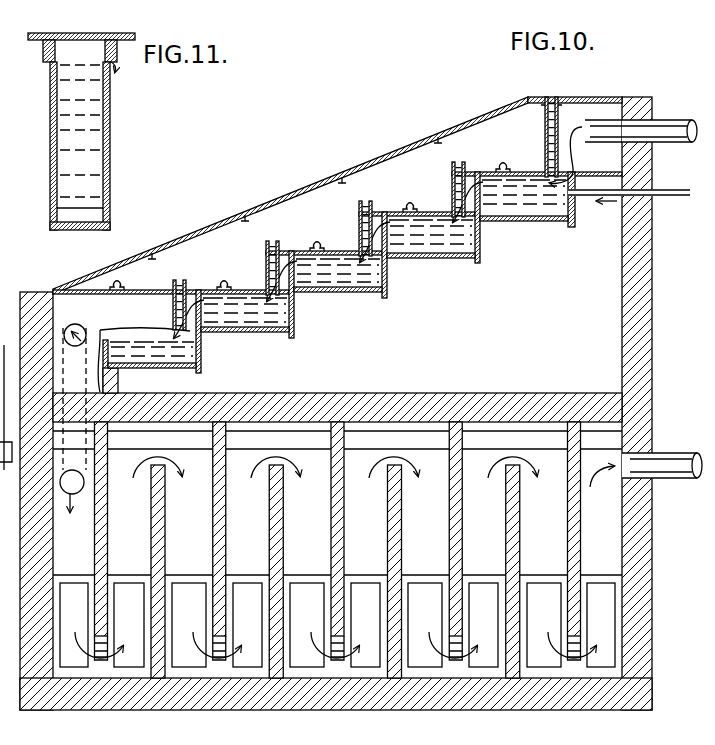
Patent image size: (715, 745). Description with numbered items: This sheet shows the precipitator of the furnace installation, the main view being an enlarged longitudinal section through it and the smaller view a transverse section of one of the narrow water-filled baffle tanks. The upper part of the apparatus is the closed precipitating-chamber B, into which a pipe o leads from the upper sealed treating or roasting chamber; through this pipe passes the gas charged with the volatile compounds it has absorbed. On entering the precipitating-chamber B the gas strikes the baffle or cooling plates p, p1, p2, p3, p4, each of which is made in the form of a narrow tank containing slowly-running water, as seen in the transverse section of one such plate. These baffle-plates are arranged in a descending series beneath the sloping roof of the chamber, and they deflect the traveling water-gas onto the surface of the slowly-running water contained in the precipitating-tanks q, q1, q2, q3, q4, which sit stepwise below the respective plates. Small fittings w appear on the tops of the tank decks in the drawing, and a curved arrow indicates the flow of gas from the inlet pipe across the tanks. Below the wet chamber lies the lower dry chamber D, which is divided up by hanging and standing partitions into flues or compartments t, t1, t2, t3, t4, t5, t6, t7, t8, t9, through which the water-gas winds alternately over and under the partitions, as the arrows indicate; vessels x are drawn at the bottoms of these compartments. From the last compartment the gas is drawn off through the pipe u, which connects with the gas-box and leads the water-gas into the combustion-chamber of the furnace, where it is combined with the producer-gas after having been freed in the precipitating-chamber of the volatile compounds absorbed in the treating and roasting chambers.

In FIG. 11, the baffle or cooling plate p is at (110, 133).
In FIG. 10, the baffle or cooling plate p is at (545, 138).
In FIG. 10, the baffle or cooling plate p1 is at (463, 163).
In FIG. 10, the baffle or cooling plate p2 is at (370, 202).
In FIG. 10, the baffle or cooling plate p3 is at (277, 242).
In FIG. 10, the baffle or cooling plate p4 is at (184, 281).
In FIG. 10, the precipitating-tank q is at (538, 221).
In FIG. 10, the precipitating-tank q1 is at (443, 258).
In FIG. 10, the precipitating-tank q2 is at (355, 292).
In FIG. 10, the precipitating-tank q3 is at (257, 332).
In FIG. 10, the precipitating-tank q4 is at (168, 368).
In FIG. 10, the cap w is at (318, 224).
In FIG. 10, the closed precipitating-chamber B is at (512, 244).
In FIG. 10, the lower dry chamber D is at (337, 439).
In FIG. 10, the pipe o is at (675, 142).
In FIG. 10, the pipe u is at (684, 480).
In FIG. 10, the flue or compartment t is at (74, 550).
In FIG. 10, the flue or compartment t1 is at (130, 550).
In FIG. 10, the flue or compartment t2 is at (189, 550).
In FIG. 10, the flue or compartment t3 is at (248, 550).
In FIG. 10, the flue or compartment t4 is at (307, 550).
In FIG. 10, the flue or compartment t5 is at (366, 550).
In FIG. 10, the flue or compartment t6 is at (426, 550).
In FIG. 10, the flue or compartment t7 is at (484, 550).
In FIG. 10, the flue or compartment t8 is at (544, 550).
In FIG. 10, the flue or compartment t9 is at (602, 550).
In FIG. 10, the vessel x is at (337, 625).